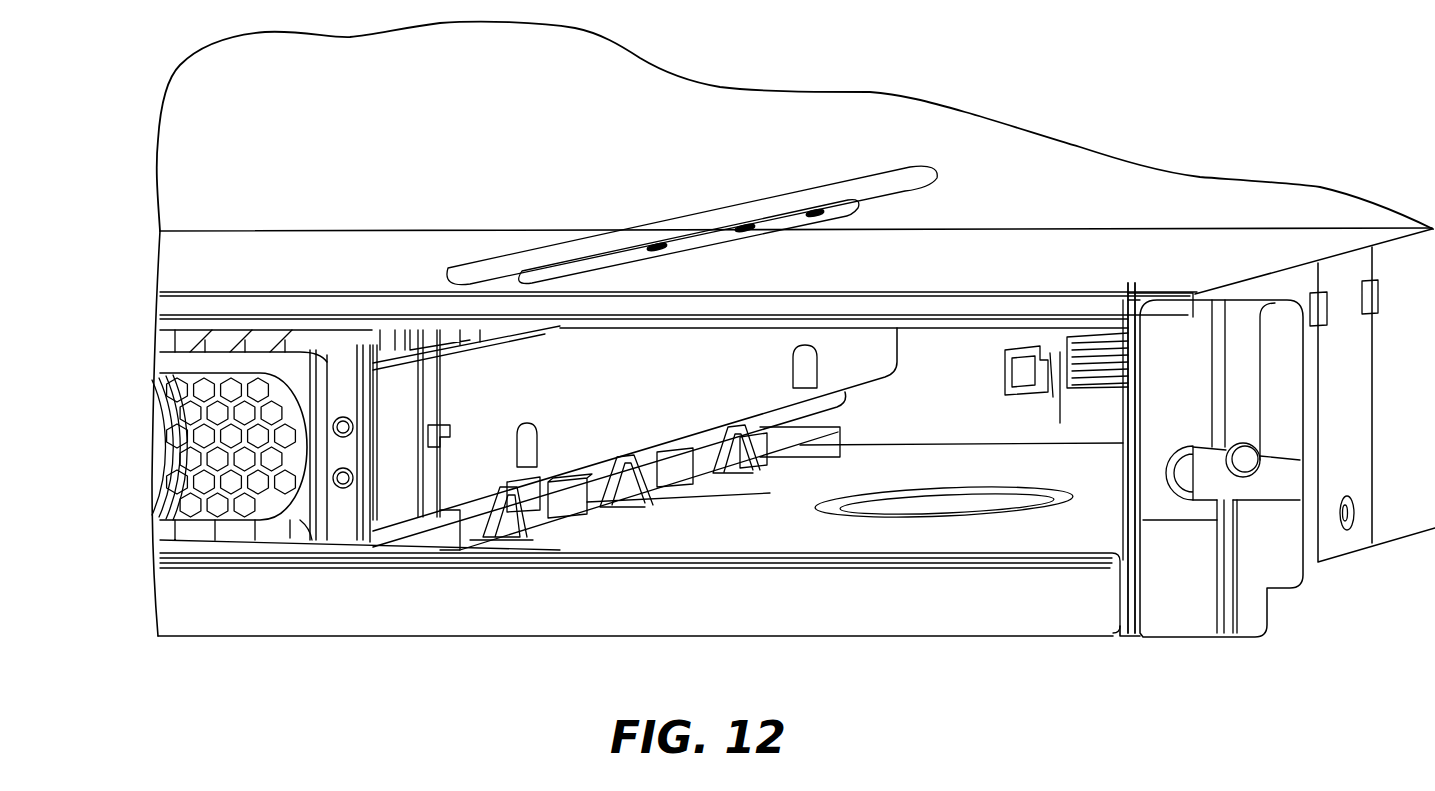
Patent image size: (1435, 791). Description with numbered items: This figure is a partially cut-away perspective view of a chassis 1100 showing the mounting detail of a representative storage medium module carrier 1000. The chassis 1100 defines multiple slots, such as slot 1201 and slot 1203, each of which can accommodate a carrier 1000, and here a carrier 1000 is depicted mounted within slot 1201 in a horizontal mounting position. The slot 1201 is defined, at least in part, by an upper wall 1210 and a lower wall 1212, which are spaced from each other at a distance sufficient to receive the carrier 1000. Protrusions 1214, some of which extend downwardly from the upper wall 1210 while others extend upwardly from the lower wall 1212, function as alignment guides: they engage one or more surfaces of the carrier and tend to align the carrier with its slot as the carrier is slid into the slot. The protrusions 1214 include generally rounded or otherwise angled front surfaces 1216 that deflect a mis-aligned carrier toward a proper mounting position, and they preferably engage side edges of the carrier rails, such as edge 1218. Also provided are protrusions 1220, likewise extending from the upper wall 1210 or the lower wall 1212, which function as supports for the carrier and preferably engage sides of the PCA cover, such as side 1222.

The carrier 1000 is at (230, 598).
The chassis 1100 is at (667, 127).
The slot 1201 is at (208, 335).
The slot 1203 is at (931, 378).
The upper wall 1210 is at (577, 330).
The lower wall 1212 is at (932, 477).
The protrusions 1214 is at (503, 513).
The front surfaces 1216 is at (467, 513).
The edge 1218 is at (663, 437).
The protrusions 1220 is at (525, 497).
The side 1222 is at (555, 480).